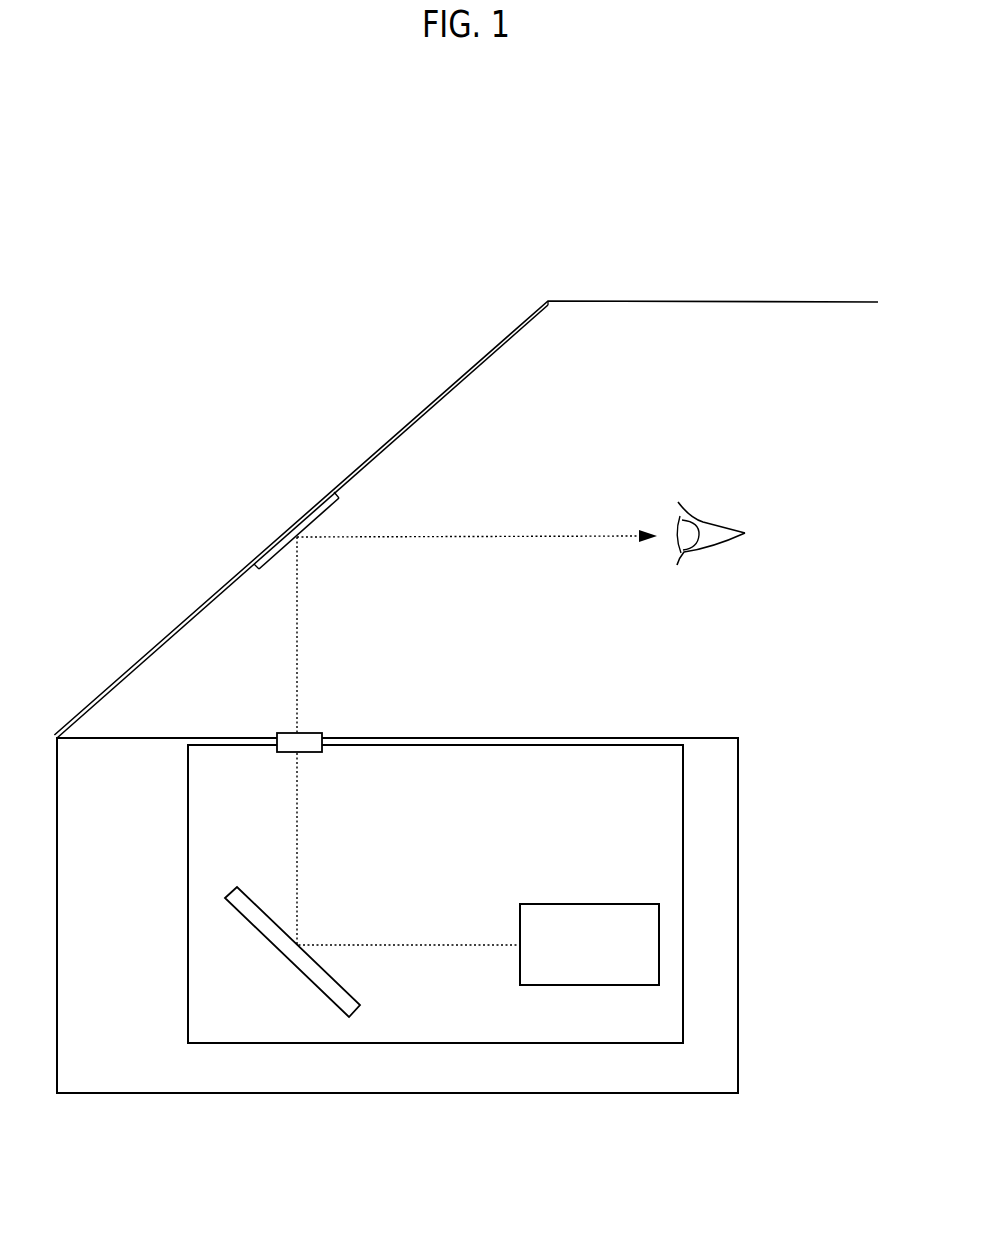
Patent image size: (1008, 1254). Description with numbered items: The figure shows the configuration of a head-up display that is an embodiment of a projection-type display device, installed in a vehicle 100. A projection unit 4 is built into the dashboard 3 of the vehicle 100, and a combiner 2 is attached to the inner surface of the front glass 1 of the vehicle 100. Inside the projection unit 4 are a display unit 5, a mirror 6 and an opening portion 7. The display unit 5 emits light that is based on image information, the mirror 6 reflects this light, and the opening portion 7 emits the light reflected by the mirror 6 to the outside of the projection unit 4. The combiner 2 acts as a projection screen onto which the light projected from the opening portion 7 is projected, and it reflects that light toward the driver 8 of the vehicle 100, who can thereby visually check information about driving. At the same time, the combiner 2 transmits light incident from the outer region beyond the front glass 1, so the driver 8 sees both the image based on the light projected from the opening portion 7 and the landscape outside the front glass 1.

The vehicle 100 is at (348, 338).
The front glass 1 is at (425, 410).
The combiner 2 is at (330, 505).
The dashboard 3 is at (723, 737).
The projection unit 4 is at (684, 850).
The display unit 5 is at (604, 904).
The mirror 6 is at (242, 888).
The opening portion 7 is at (317, 733).
The driver 8 is at (702, 516).